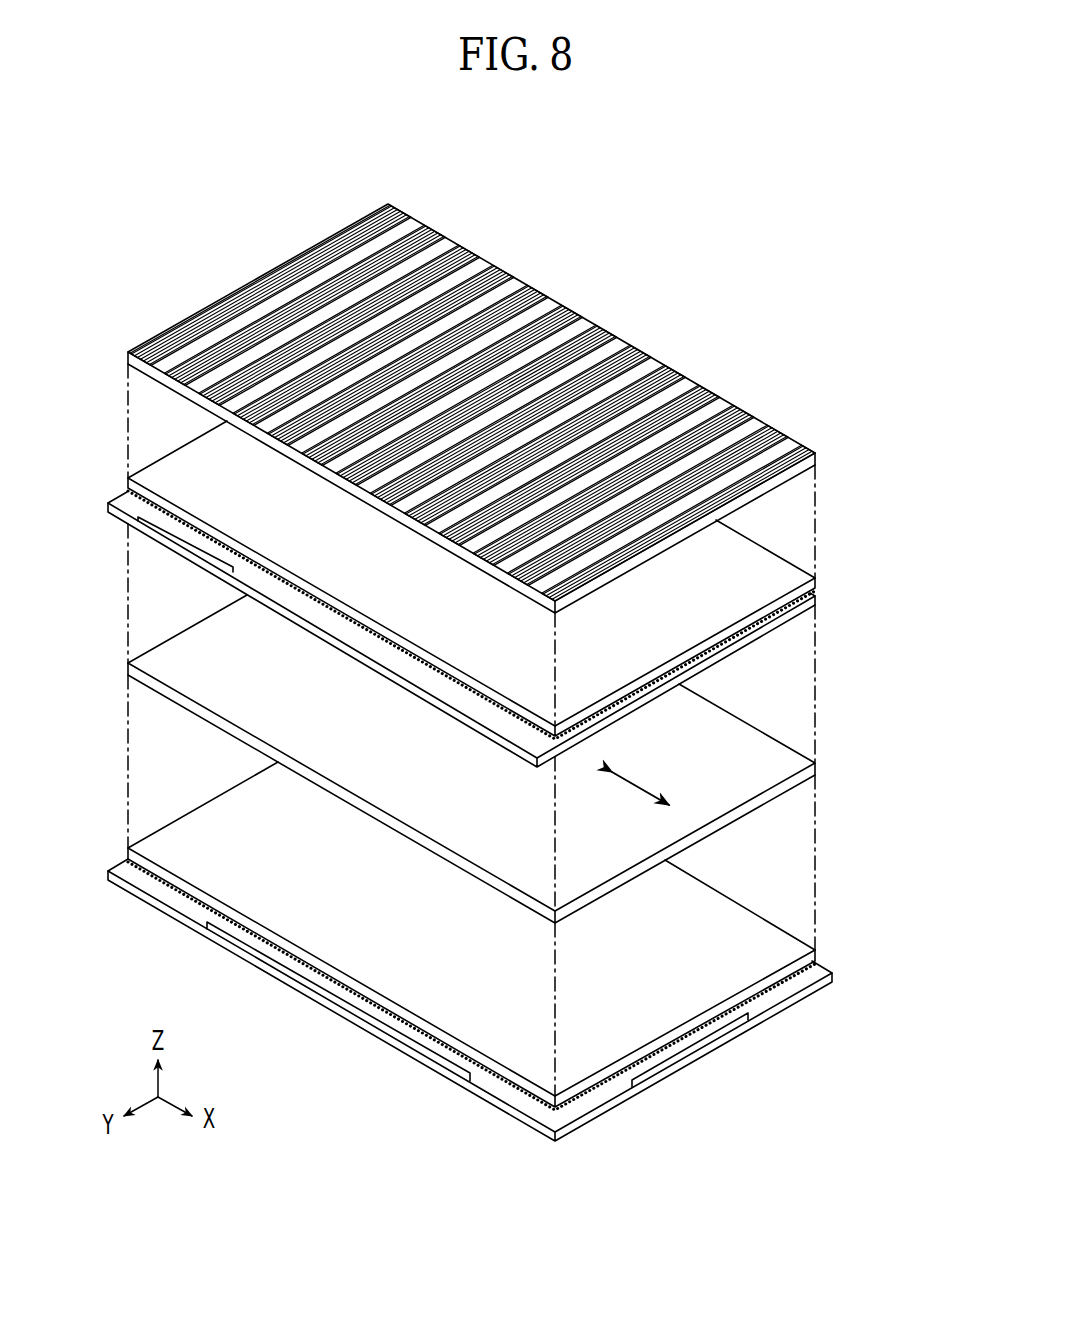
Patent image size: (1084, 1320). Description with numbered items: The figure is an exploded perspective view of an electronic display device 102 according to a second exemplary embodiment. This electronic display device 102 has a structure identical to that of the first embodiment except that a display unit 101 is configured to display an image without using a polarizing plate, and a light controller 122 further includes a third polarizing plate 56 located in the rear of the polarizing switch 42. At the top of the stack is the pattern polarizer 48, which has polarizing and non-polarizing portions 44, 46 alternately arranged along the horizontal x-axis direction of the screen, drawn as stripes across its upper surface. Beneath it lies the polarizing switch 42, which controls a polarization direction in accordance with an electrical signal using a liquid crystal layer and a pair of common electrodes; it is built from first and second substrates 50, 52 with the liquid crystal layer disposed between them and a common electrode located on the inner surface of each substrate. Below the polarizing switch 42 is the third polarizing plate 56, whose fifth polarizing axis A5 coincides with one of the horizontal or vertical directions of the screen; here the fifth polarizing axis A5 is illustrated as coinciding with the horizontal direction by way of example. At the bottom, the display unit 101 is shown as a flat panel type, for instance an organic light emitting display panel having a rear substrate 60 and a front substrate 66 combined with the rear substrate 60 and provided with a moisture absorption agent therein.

The electronic display device 102 is at (522, 192).
The light controller 122 is at (887, 431).
The pattern polarizer 48 is at (820, 448).
The polarizing portion 44 is at (571, 310).
The non-polarizing portion 46 is at (650, 367).
The polarizing switch 42 is at (820, 569).
The second substrate 52 is at (173, 462).
The first substrate 50 is at (125, 508).
The third polarizing plate 56 is at (778, 749).
The fifth polarizing axis A5 is at (642, 783).
The front substrate 66 is at (745, 912).
The rear substrate 60 is at (789, 990).
The display unit 101 is at (490, 1105).